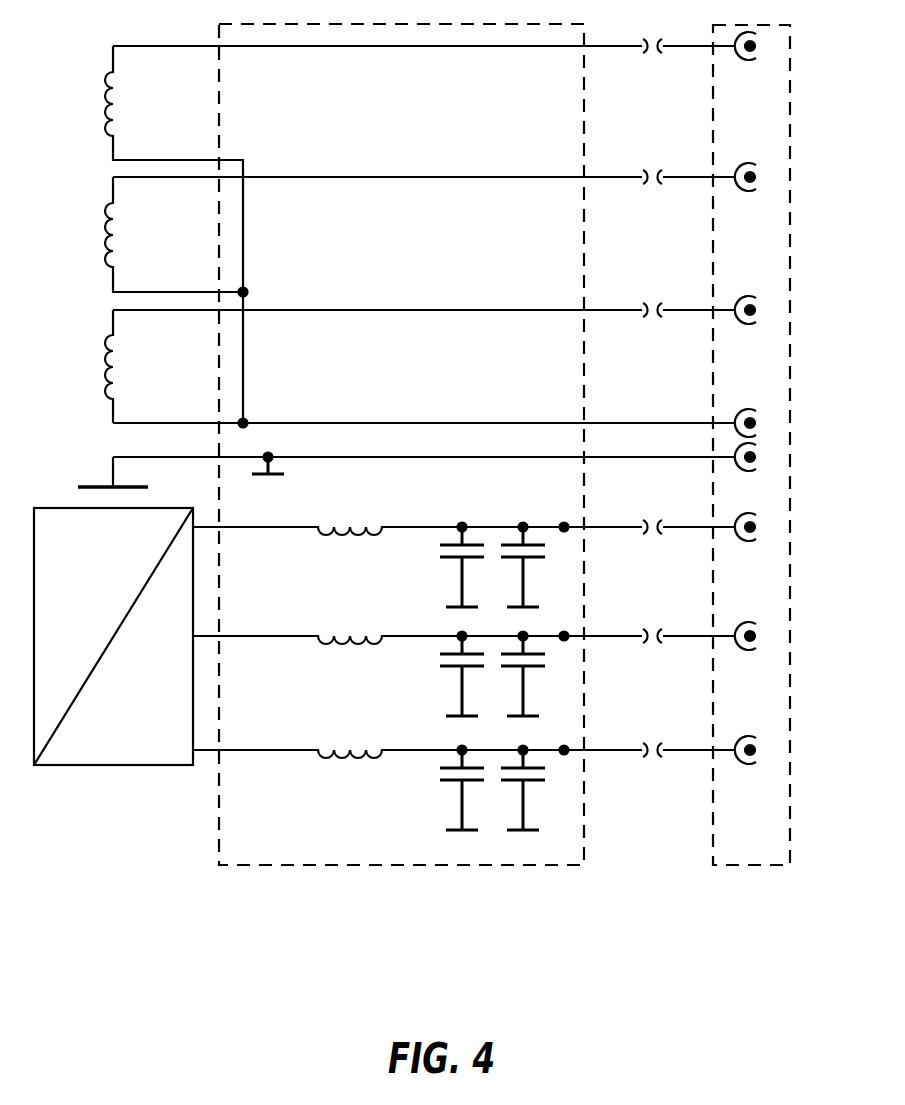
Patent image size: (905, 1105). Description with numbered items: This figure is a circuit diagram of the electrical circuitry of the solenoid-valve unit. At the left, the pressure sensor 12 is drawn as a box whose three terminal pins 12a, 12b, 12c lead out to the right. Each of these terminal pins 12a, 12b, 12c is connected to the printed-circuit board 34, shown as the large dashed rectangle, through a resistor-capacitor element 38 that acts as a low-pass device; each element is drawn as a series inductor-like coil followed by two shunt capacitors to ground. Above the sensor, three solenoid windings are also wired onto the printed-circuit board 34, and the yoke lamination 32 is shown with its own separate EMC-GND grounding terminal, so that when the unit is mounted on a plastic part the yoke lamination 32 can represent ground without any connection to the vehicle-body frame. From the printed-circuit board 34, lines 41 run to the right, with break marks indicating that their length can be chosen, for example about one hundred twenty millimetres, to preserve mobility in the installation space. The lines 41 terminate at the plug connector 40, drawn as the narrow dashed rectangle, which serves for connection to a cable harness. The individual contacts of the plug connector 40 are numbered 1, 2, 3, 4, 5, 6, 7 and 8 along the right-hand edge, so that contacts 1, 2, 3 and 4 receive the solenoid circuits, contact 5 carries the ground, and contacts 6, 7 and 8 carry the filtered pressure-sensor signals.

The connector pin 1 is at (764, 46).
The connector pin 2 is at (764, 177).
The connector pin 3 is at (764, 310).
The connector pin 4 is at (764, 423).
The connector pin 5 is at (764, 457).
The connector pin 6 is at (764, 527).
The connector pin 7 is at (764, 636).
The connector pin 8 is at (764, 750).
The pressure sensor 12 is at (118, 742).
The terminal pin 12a is at (281, 529).
The terminal pin 12b is at (281, 638).
The terminal pin 12c is at (281, 752).
The yoke lamination 32 is at (87, 484).
The printed-circuit board 34 is at (566, 868).
The resistor-capacitor (RC) element 38 is at (484, 880).
The plug connector 40 is at (765, 868).
The lines 41 is at (617, 637).